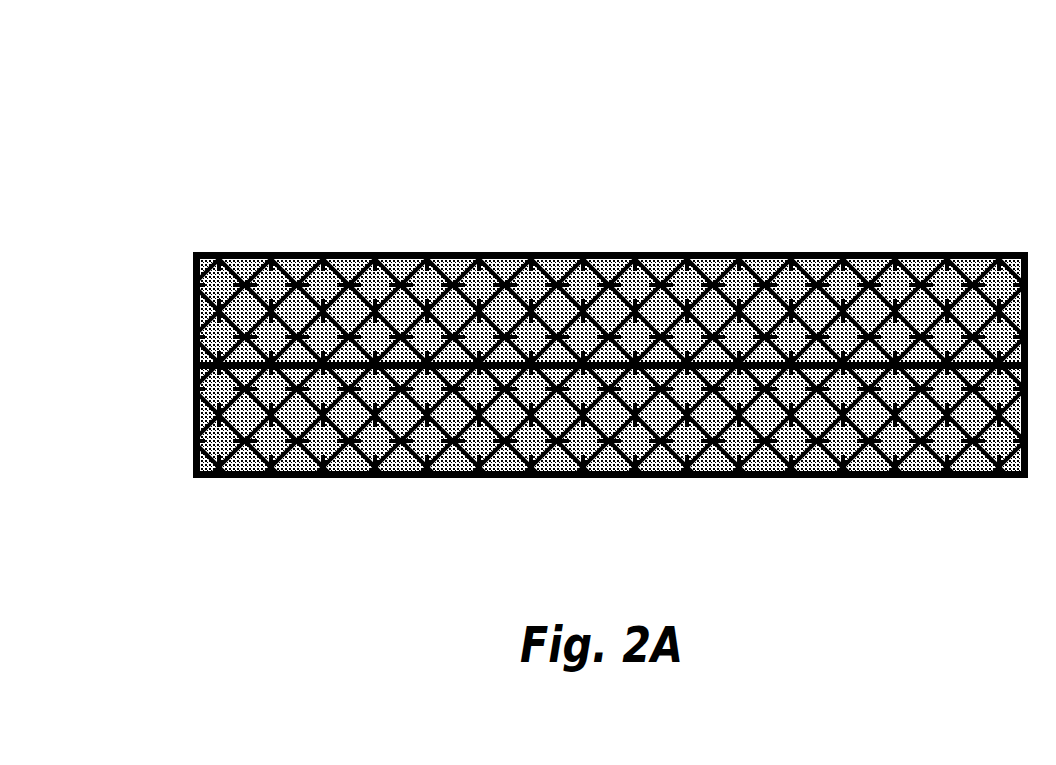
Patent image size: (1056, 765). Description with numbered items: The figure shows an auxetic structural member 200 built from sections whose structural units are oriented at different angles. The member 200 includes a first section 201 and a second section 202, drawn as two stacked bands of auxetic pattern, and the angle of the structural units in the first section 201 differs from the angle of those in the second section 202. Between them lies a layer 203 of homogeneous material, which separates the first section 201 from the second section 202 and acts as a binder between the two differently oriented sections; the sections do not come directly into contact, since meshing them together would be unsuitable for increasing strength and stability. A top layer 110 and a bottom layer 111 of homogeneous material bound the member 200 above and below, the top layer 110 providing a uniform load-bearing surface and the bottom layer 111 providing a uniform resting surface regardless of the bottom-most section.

The auxetic structural member 200 is at (580, 308).
The top layer 110 is at (412, 251).
The bottom layer 111 is at (468, 479).
The first section 201 is at (798, 288).
The second section 202 is at (423, 458).
The layer 203 is at (503, 360).